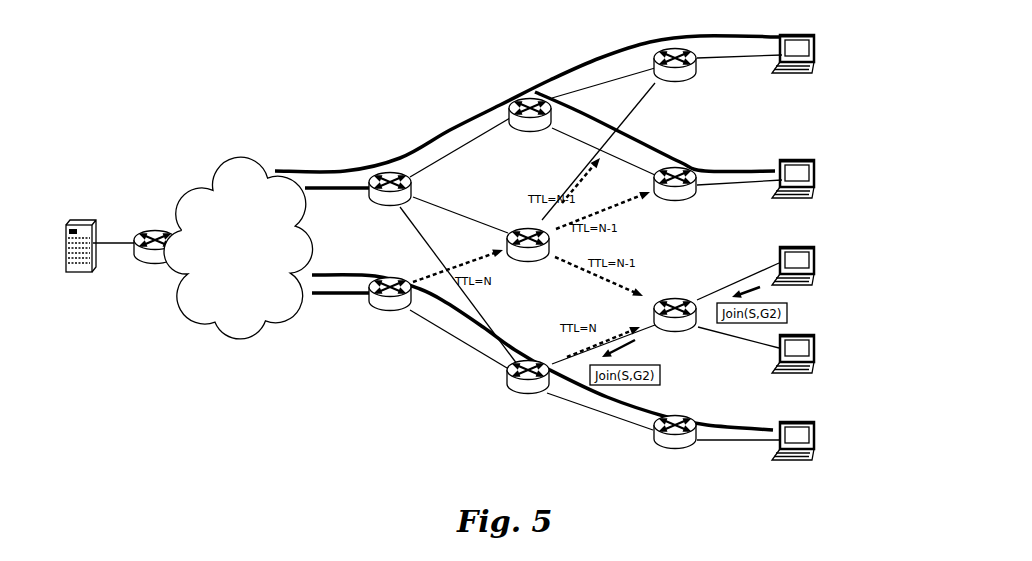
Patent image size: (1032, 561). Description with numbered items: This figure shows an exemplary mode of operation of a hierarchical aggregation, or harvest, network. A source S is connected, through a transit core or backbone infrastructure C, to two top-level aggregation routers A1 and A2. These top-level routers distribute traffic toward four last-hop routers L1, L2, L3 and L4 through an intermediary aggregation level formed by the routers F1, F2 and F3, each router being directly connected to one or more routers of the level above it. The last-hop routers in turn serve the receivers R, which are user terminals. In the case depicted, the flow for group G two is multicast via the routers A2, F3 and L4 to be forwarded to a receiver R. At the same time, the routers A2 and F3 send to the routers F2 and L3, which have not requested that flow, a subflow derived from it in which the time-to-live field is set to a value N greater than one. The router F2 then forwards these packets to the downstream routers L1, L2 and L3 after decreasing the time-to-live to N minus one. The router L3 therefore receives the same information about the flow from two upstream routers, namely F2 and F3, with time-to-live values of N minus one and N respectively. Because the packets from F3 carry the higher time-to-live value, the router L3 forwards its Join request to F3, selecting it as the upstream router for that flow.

The source S is at (80, 217).
The core or backbone transit infrastructure C is at (232, 165).
The top-level aggregation router A1 is at (390, 203).
The top-level aggregation router A2 is at (390, 306).
The intermediary aggregation router F1 is at (530, 127).
The intermediary aggregation router F2 is at (528, 259).
The intermediary aggregation router F3 is at (528, 390).
The last-hop router L1 is at (675, 77).
The last-hop router L2 is at (675, 197).
The last-hop router L3 is at (675, 329).
The last-hop router L4 is at (675, 446).
The receivers R is at (817, 60).